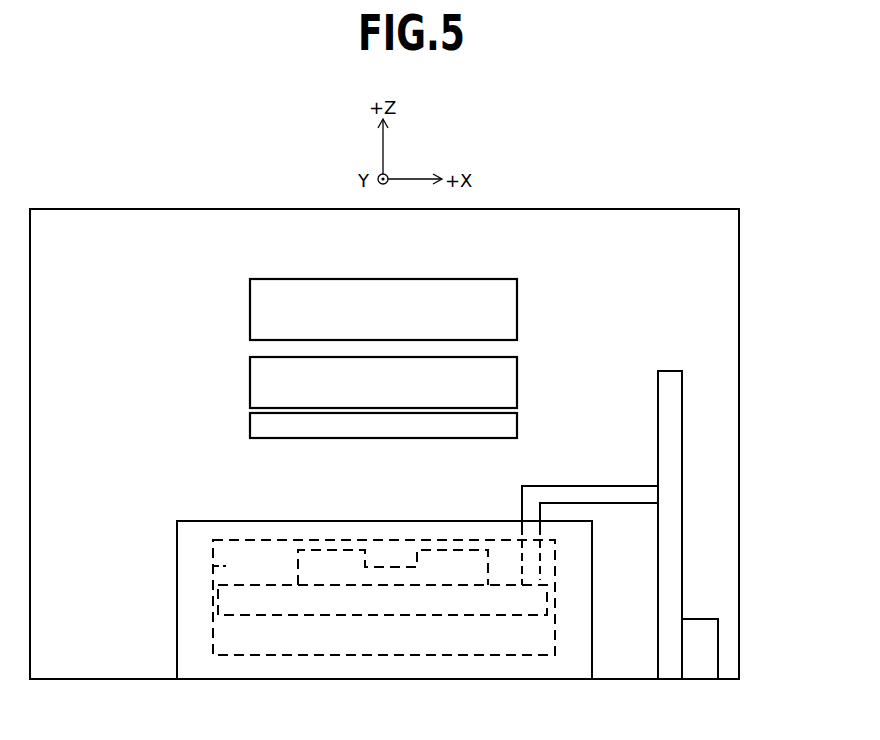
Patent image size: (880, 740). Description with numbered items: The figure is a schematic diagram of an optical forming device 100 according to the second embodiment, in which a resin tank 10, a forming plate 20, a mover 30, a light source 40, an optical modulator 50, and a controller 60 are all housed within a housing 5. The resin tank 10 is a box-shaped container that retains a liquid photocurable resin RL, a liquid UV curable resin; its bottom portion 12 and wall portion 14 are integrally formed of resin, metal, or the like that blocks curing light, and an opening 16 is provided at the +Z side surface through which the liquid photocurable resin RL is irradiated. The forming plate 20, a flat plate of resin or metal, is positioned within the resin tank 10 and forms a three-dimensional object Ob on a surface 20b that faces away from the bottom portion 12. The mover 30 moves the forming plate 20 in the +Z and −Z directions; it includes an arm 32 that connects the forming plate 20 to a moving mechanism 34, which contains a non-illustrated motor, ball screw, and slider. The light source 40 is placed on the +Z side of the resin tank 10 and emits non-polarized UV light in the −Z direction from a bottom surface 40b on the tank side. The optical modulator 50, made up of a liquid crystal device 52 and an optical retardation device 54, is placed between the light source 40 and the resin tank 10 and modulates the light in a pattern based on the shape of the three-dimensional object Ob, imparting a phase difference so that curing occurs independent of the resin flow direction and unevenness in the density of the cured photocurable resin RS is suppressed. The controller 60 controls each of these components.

The optical forming device 100 is at (124, 166).
The housing 5 is at (668, 208).
The light source 40 is at (250, 307).
The bottom surface 40b is at (503, 341).
The optical modulator 50 is at (319, 397).
The liquid crystal device 52 is at (250, 380).
The optical retardation device 54 is at (250, 422).
The mover 30 is at (602, 525).
The arm 32 is at (575, 485).
The moving mechanism 34 is at (658, 474).
The resin tank 10 is at (398, 568).
The bottom portion 12 is at (177, 657).
The wall portion 14 is at (177, 618).
The opening 16 is at (489, 519).
The forming plate 20 is at (560, 607).
The surface 20b is at (250, 580).
The cured photocurable resin RS is at (297, 545).
The liquid photocurable resin RL is at (213, 566).
The three-dimensional object Ob is at (462, 540).
The controller 60 is at (700, 618).